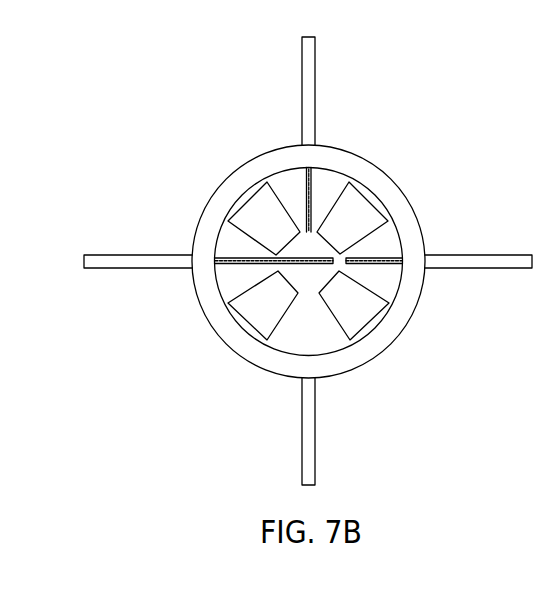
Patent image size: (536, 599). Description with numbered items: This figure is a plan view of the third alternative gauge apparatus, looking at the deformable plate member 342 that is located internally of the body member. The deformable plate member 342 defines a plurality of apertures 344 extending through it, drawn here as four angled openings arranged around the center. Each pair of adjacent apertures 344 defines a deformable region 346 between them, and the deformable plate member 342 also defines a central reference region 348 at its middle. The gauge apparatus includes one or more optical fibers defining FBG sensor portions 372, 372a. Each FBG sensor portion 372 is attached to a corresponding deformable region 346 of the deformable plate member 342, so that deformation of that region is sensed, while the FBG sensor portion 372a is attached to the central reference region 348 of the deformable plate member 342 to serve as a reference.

The deformable plate member 342 is at (327, 344).
The apertures 344 is at (357, 303).
The deformable region 346 is at (225, 285).
The central reference region 348 is at (311, 247).
The FBG sensor portion 372 is at (306, 185).
The FBG sensor portion 372a is at (305, 257).